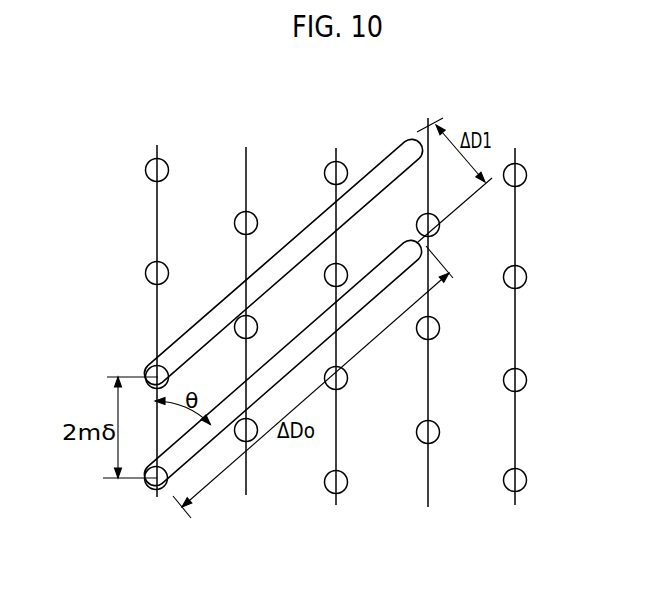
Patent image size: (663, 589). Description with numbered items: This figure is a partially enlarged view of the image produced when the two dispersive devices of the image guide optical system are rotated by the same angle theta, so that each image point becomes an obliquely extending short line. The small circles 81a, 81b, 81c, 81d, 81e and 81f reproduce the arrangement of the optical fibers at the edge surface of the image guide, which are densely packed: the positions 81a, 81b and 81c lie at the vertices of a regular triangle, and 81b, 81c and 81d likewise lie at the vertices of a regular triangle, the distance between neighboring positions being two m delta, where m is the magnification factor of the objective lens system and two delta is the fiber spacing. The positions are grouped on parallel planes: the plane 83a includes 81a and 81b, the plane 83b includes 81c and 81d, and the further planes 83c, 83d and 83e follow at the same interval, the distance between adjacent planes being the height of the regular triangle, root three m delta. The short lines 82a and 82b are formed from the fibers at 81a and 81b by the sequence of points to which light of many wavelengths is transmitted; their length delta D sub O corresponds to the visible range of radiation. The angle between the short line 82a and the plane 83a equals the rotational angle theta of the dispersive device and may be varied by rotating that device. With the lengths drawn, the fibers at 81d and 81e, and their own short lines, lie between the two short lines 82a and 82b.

The optical fiber position 81a is at (150, 490).
The optical fiber position 81b is at (150, 367).
The optical fiber position 81c is at (253, 438).
The optical fiber position 81d is at (250, 313).
The optical fiber position 81e is at (344, 267).
The optical fiber position 81f is at (440, 232).
The short line 82a is at (359, 314).
The short line 82b is at (293, 242).
The plane 83a is at (158, 144).
The plane 83b is at (248, 156).
The plane 83c is at (337, 150).
The plane 83d is at (428, 128).
The plane 83e is at (516, 150).